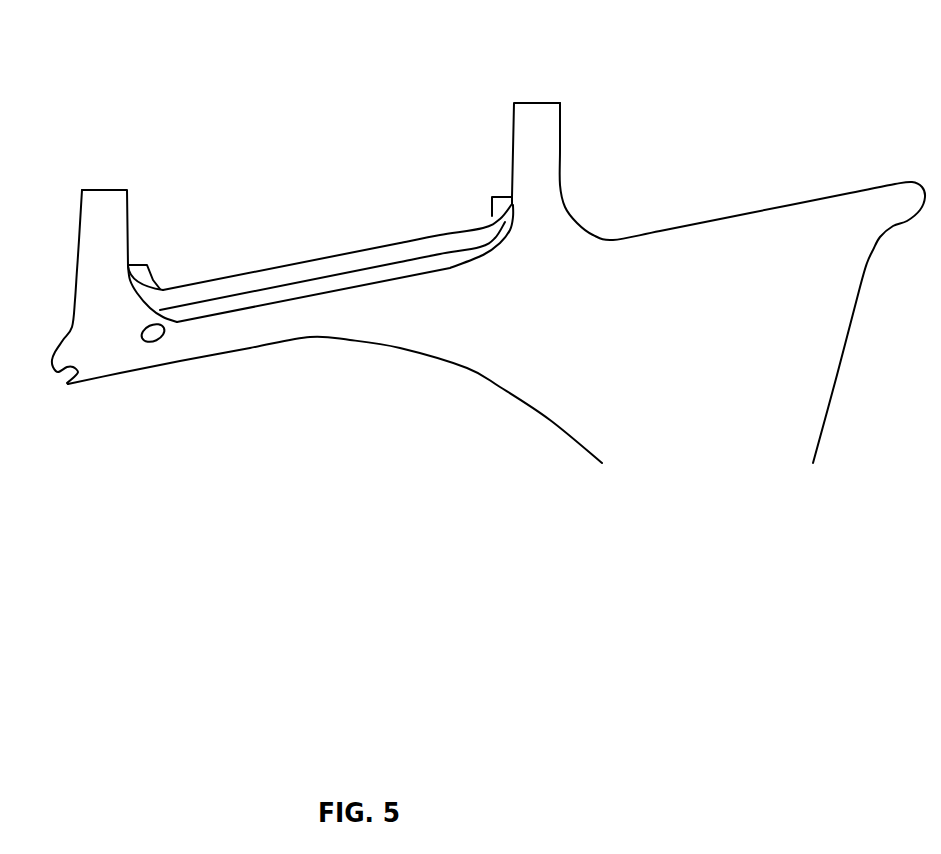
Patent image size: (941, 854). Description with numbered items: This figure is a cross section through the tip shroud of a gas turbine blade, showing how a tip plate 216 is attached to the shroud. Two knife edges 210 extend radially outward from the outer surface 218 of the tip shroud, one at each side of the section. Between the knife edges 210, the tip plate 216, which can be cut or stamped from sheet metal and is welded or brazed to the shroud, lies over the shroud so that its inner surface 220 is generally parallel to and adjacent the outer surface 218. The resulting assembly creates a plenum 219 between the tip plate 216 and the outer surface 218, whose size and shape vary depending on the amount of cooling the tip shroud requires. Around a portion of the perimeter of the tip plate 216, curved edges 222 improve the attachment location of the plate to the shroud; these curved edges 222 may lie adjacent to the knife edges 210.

The knife edge 210 is at (107, 207).
The tip plate 216 is at (333, 264).
The outer surface 218 is at (352, 276).
The plenum 219 is at (265, 300).
The inner surface 220 is at (408, 278).
The curved edge 222 is at (163, 289).